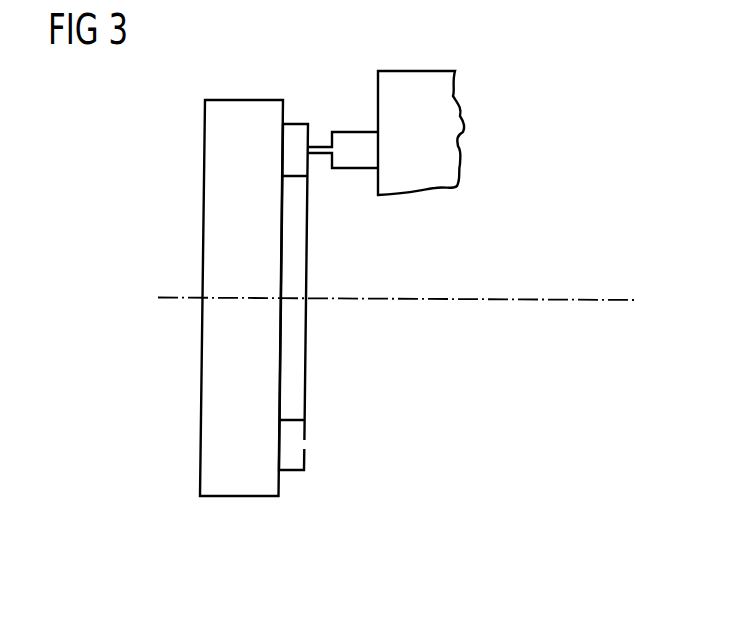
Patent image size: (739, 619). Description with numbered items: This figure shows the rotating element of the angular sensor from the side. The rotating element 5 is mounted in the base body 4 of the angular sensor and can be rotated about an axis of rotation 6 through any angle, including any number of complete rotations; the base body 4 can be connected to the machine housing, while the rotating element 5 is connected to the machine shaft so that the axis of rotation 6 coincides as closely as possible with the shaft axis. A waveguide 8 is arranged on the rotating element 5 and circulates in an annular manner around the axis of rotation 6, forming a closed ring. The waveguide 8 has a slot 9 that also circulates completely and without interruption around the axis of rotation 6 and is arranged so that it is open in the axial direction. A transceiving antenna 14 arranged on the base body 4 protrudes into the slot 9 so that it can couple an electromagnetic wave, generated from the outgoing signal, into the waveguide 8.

The base body 4 is at (463, 132).
The rotating element 5 is at (241, 100).
The axis of rotation 6 is at (518, 298).
The waveguide 8 is at (296, 124).
The slot 9 is at (305, 441).
The transceiving antenna 14 is at (320, 147).